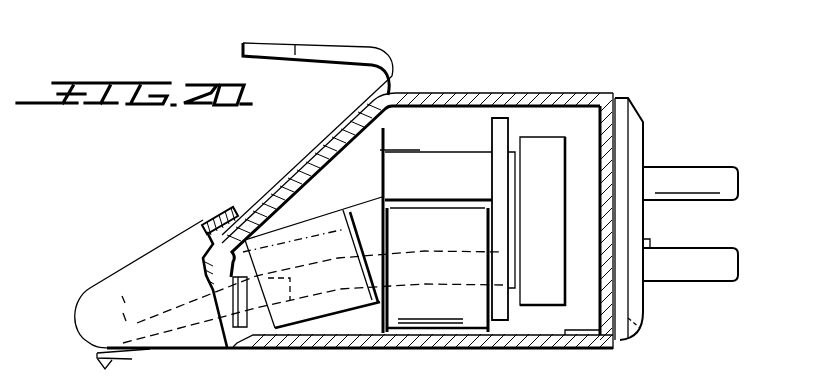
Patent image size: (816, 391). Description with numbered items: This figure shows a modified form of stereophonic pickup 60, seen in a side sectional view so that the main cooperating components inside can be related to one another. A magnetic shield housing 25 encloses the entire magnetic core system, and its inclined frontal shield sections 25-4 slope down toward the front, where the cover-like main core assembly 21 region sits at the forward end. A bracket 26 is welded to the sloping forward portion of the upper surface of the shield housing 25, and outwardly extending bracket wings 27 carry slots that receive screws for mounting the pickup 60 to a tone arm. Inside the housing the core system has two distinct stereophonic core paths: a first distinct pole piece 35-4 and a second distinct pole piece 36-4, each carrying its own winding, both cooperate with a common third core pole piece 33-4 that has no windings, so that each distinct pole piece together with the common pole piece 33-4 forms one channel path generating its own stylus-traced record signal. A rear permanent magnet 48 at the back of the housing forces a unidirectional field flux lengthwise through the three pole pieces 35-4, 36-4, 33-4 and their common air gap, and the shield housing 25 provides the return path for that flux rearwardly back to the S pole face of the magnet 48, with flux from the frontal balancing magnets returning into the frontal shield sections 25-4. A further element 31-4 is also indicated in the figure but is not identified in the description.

The main core assembly 21 is at (247, 200).
The shield housing 25 is at (460, 93).
The frontal shield sections 25-4 is at (321, 160).
The bracket 26 is at (285, 180).
The bracket wings 27 is at (280, 27).
The yoke 31-4 is at (378, 130).
The common third core pole piece 33-4 is at (423, 157).
The distinct pole piece 35-4 is at (459, 290).
The distinct pole piece 36-4 is at (418, 288).
The rear permanent magnet 48 is at (545, 143).
The stereophonic pickup 60 is at (507, 87).